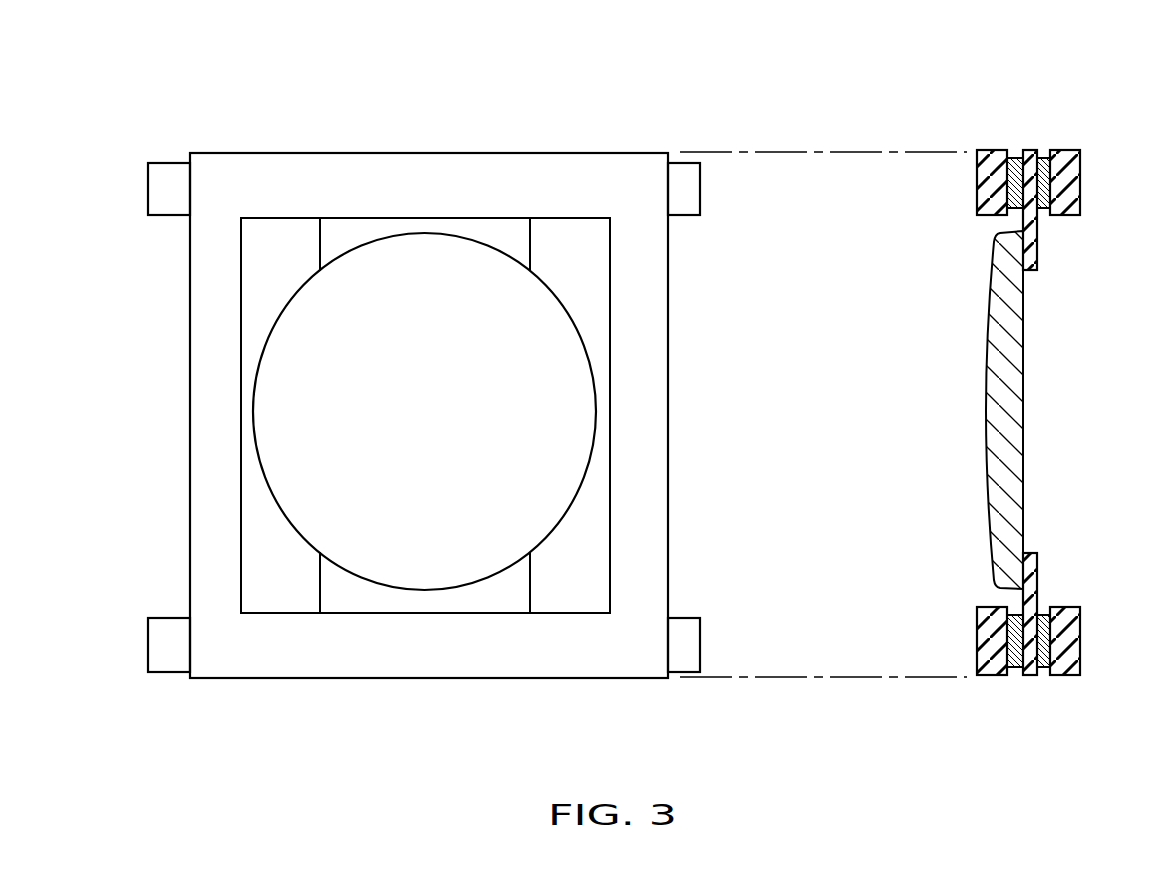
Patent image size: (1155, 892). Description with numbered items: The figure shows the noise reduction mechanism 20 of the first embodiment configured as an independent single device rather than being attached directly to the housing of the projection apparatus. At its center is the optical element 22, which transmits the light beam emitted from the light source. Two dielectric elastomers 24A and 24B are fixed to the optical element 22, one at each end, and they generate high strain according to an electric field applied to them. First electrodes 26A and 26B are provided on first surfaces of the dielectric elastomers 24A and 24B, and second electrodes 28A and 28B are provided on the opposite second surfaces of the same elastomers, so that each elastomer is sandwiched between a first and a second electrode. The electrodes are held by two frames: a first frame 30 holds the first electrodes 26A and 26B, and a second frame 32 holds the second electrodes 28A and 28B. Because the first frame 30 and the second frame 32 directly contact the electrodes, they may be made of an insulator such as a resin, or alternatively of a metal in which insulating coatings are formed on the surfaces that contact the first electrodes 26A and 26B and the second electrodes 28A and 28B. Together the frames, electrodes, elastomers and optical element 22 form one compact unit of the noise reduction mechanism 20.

The noise reduction mechanism 20 is at (232, 88).
The optical element 22 is at (278, 406).
The dielectric elastomer 24A is at (343, 235).
The dielectric elastomer 24B is at (350, 596).
The first electrode 26A is at (148, 190).
The first electrode 26B is at (148, 641).
The second electrode 28A is at (700, 185).
The second electrode 28B is at (700, 640).
The first frame 30 is at (1082, 187).
The second frame 32 is at (660, 423).